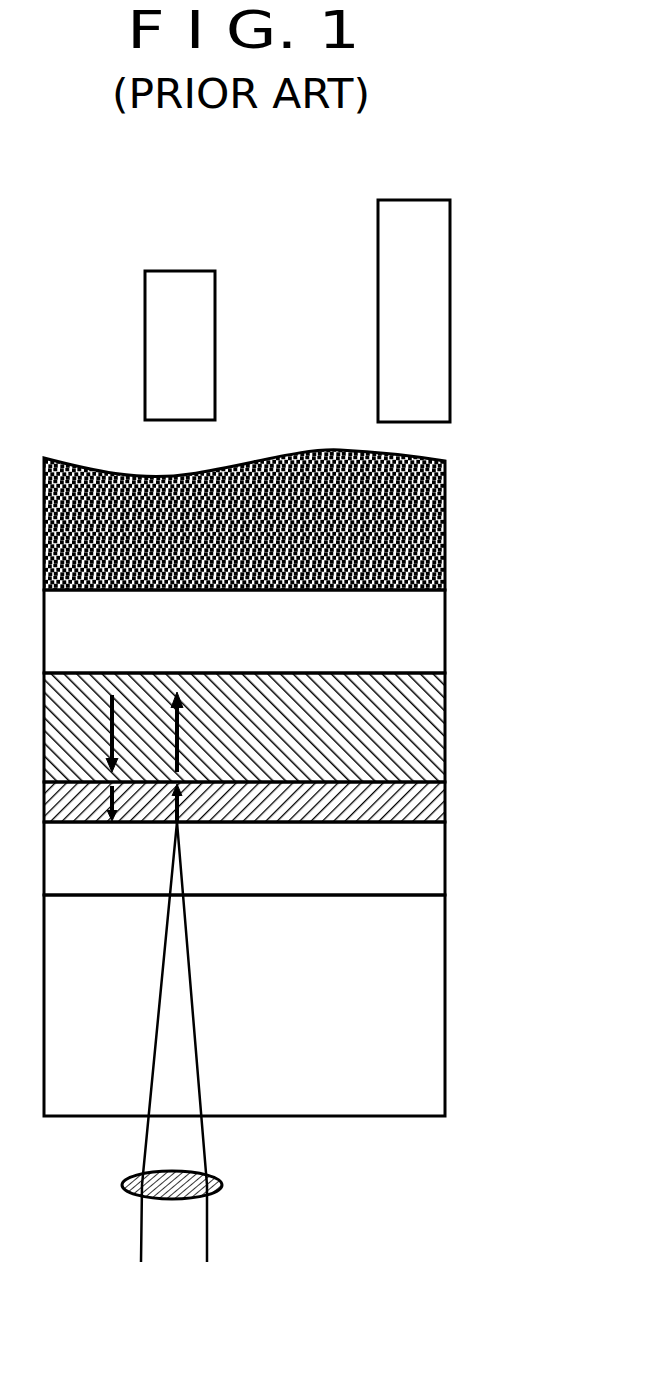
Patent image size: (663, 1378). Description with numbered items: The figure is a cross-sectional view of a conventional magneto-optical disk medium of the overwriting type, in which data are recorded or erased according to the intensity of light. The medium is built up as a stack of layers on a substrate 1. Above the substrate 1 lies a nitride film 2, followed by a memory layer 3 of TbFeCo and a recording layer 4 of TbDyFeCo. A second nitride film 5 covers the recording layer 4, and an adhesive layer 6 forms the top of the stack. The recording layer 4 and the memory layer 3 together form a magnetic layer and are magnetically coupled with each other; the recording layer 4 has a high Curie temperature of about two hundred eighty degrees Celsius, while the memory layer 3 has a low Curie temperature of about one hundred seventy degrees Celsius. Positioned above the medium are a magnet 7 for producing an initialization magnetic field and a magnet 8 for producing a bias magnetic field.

The substrate 1 is at (440, 1007).
The nitride film 2 is at (440, 856).
The memory layer 3 is at (445, 807).
The recording layer 4 is at (445, 748).
The nitride film 5 is at (440, 638).
The adhesive layer 6 is at (446, 531).
The magnet for producing an initialization magnetic field 7 is at (442, 312).
The magnet for producing a bias magnetic field 8 is at (208, 345).